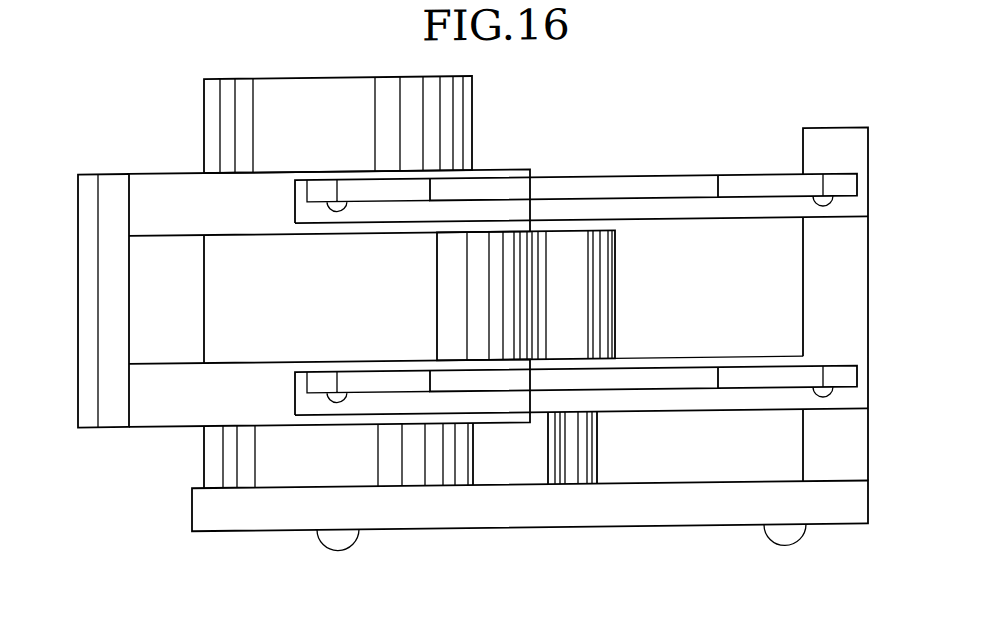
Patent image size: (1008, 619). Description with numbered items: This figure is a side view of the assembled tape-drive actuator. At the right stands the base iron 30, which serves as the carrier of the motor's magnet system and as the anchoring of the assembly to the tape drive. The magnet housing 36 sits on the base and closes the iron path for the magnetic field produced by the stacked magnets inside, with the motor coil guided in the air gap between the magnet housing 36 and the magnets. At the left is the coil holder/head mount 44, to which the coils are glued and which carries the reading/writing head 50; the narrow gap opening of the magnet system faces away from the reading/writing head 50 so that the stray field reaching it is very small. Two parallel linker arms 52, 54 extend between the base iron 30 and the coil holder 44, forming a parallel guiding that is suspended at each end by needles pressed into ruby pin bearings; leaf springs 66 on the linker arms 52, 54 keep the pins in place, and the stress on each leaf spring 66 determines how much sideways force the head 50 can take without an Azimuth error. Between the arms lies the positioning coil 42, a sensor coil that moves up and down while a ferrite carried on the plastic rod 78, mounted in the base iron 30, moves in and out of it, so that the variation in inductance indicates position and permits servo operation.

The base iron 30 is at (855, 304).
The magnet housing 36 is at (452, 137).
The positioning coil 42 is at (595, 270).
The coil holder/head mount 44 is at (167, 165).
The reading/writing head 50 is at (90, 310).
The linker arm 52 is at (727, 215).
The linker arm 54 is at (727, 403).
The leaf spring 66 is at (647, 192).
The plastic rod 78 is at (582, 438).